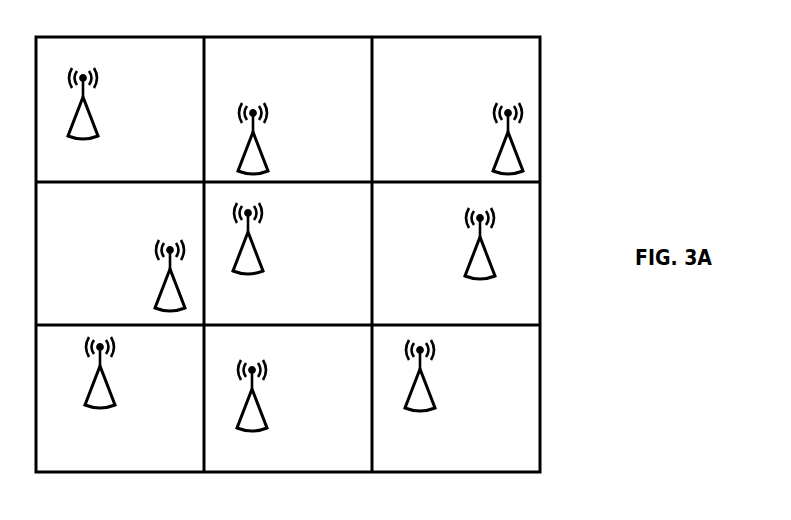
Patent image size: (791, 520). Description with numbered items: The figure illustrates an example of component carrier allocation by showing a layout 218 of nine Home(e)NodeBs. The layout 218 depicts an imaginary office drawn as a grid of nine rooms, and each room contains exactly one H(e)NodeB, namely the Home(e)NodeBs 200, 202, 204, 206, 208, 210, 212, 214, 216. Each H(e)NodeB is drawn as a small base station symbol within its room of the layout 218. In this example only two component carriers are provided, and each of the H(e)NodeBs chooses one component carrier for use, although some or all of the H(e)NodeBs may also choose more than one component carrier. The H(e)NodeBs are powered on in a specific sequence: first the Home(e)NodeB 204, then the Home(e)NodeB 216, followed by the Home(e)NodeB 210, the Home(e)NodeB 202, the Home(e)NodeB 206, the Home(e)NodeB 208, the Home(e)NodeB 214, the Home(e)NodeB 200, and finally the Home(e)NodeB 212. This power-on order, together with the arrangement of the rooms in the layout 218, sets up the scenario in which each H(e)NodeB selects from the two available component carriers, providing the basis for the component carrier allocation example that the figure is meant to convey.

The Home(e)NodeB 200 is at (96, 126).
The Home(e)NodeB 202 is at (157, 296).
The Home(e)NodeB 204 is at (114, 397).
The Home(e)NodeB 206 is at (267, 152).
The Home(e)NodeB 208 is at (262, 262).
The Home(e)NodeB 210 is at (265, 420).
The Home(e)NodeB 212 is at (498, 157).
The Home(e)NodeB 214 is at (467, 268).
The Home(e)NodeB 216 is at (432, 400).
The layout 218 is at (223, 37).